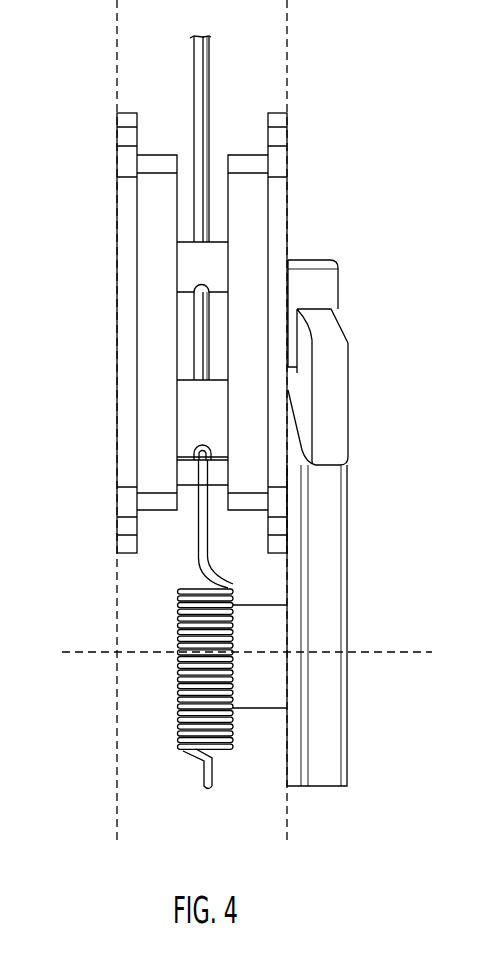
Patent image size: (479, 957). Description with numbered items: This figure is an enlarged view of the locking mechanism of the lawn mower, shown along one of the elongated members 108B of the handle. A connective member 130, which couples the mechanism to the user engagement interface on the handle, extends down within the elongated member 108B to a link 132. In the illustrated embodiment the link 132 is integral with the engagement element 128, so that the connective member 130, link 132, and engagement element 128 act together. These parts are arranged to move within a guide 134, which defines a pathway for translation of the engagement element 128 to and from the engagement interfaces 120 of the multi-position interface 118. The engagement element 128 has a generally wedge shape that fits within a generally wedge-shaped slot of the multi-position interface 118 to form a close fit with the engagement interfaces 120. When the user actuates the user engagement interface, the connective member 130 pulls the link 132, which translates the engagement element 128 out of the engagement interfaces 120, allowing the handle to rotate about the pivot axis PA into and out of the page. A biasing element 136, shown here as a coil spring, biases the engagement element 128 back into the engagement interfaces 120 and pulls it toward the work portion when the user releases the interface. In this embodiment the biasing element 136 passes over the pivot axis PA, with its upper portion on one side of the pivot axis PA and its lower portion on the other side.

The elongated member 108B is at (117, 58).
The connective member 130 is at (210, 110).
The engagement element 128 is at (308, 279).
The engagement interfaces 120 is at (300, 338).
The multi-position interface 118 is at (323, 430).
The link 132 is at (205, 398).
The guide 134 is at (143, 428).
The biasing element 136 is at (213, 640).
The pivot axis PA is at (383, 651).